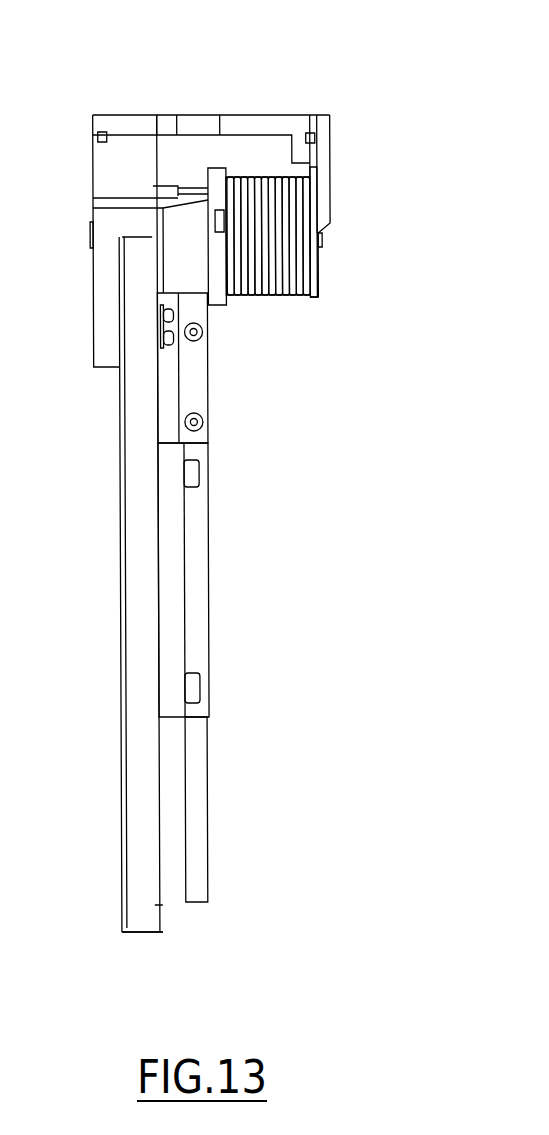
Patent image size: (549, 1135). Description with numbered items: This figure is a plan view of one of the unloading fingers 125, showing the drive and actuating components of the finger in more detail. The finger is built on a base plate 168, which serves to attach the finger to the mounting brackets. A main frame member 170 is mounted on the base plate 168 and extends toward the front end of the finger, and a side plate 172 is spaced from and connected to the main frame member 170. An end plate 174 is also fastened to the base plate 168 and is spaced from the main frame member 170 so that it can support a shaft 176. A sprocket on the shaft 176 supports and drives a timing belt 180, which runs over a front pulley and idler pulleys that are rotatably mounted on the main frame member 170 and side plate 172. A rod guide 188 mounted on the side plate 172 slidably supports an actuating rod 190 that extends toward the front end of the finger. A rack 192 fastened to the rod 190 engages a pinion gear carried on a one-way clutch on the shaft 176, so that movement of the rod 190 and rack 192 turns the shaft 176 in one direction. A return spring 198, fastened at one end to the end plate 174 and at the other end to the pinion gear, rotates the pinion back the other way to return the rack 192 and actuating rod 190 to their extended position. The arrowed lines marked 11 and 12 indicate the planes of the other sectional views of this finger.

The section line 11- 11 is at (98, 978).
The section line 12- 12 is at (137, 1005).
The unloading finger 125 is at (132, 590).
The base plate 168 is at (262, 123).
The main frame member 170 is at (112, 167).
The side plate 172 is at (160, 907).
The end plate 174 is at (322, 185).
The shaft 176 is at (322, 240).
The timing belt 180 is at (138, 935).
The rod guide 188 is at (203, 577).
The actuating rod 190 is at (197, 840).
The rack 192 is at (200, 393).
The return spring 198 is at (263, 297).